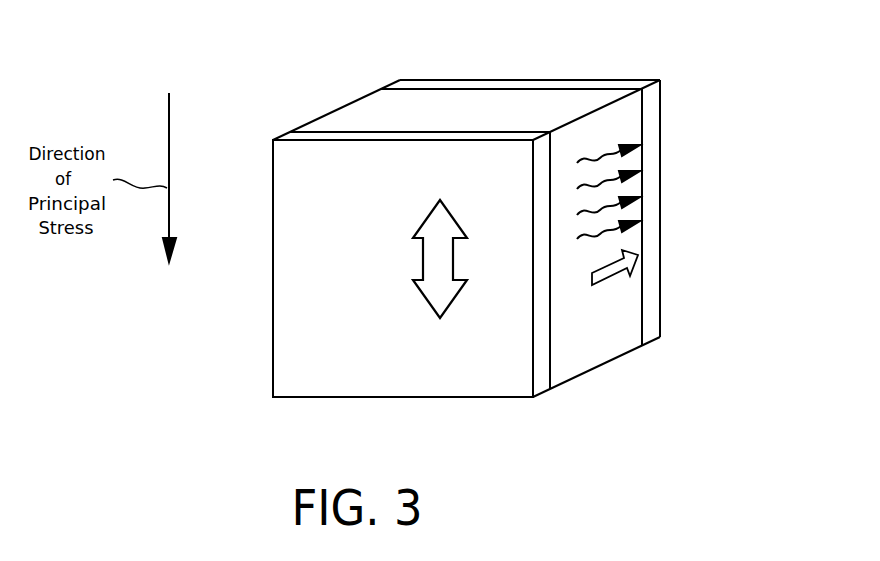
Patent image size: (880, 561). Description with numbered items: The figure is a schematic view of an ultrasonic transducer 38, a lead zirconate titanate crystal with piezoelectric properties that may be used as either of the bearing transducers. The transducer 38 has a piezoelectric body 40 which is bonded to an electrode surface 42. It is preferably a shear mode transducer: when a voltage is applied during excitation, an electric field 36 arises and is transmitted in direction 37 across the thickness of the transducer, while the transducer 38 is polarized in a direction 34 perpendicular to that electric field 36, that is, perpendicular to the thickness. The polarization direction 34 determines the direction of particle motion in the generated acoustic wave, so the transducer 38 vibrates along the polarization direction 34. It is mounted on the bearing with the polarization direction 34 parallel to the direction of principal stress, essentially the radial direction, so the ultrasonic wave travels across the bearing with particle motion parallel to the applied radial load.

The polarization direction 34 is at (455, 255).
The electric field 36 is at (612, 143).
The direction of electric field transmission 37 is at (640, 262).
The ultrasonic transducer 38 is at (735, 135).
The piezoelectric body 40 is at (627, 297).
The electrode surface 42 is at (540, 80).